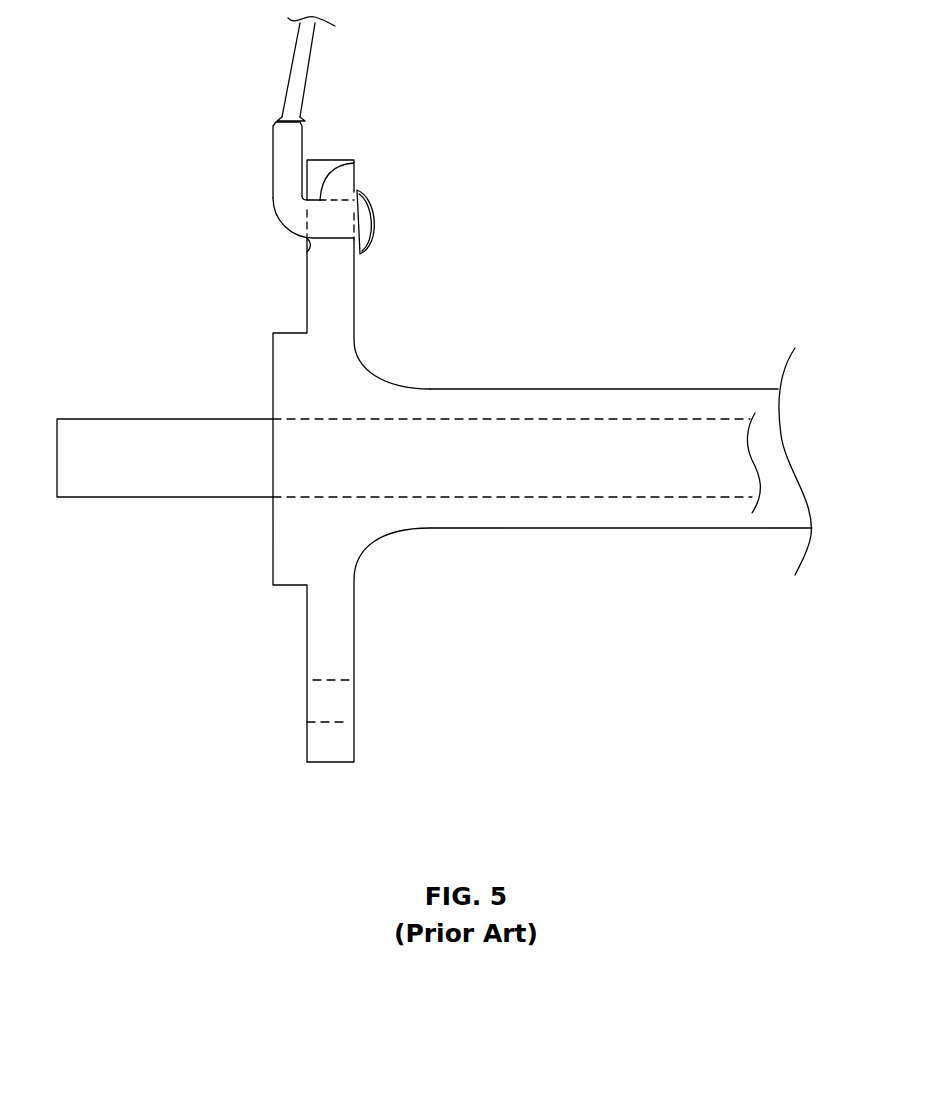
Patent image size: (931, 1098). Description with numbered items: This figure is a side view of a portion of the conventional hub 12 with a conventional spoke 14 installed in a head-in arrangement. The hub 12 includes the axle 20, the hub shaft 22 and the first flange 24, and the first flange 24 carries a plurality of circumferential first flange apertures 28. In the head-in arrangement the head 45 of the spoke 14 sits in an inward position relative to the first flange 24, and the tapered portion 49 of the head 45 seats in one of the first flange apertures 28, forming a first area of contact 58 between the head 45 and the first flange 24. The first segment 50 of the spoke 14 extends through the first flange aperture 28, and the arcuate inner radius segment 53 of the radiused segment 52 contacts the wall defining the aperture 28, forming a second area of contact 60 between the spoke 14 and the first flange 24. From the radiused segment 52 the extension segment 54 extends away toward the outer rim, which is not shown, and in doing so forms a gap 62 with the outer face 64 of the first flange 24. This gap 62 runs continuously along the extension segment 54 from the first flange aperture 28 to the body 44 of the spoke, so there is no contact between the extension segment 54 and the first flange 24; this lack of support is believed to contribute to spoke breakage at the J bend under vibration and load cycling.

The hub 12 is at (703, 389).
The spoke 14 is at (294, 38).
The axle 20 is at (92, 419).
The hub shaft 22 is at (550, 528).
The first flange 24 is at (355, 290).
The first flange apertures 28 is at (305, 245).
The body 44 is at (290, 80).
The head 45 is at (378, 243).
The tapered portion 49 is at (368, 254).
The first segment 50 is at (306, 250).
The radiused segment 52 is at (275, 205).
The arcuate inner radius segment 53 is at (303, 232).
The extension segment 54 is at (282, 134).
The first area of contact 58 is at (391, 210).
The second area of contact 60 is at (358, 190).
The gap 62 is at (306, 113).
The outer face 64 is at (307, 172).